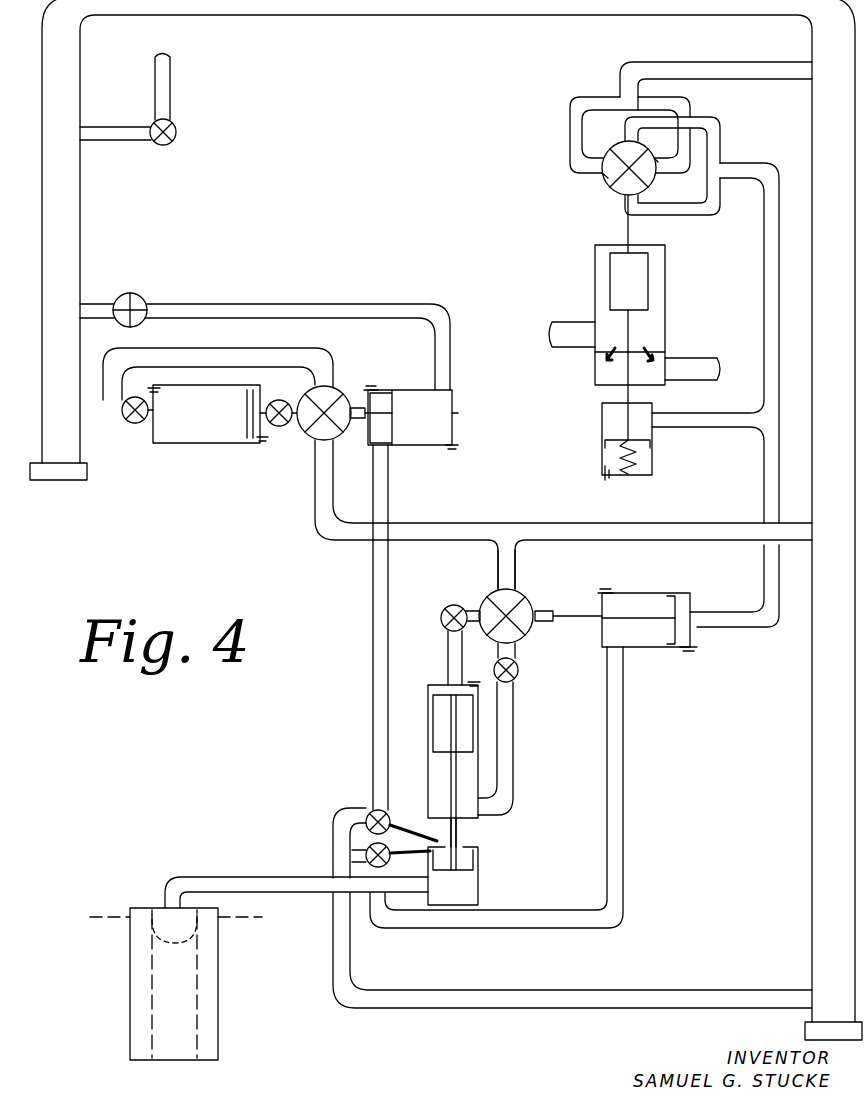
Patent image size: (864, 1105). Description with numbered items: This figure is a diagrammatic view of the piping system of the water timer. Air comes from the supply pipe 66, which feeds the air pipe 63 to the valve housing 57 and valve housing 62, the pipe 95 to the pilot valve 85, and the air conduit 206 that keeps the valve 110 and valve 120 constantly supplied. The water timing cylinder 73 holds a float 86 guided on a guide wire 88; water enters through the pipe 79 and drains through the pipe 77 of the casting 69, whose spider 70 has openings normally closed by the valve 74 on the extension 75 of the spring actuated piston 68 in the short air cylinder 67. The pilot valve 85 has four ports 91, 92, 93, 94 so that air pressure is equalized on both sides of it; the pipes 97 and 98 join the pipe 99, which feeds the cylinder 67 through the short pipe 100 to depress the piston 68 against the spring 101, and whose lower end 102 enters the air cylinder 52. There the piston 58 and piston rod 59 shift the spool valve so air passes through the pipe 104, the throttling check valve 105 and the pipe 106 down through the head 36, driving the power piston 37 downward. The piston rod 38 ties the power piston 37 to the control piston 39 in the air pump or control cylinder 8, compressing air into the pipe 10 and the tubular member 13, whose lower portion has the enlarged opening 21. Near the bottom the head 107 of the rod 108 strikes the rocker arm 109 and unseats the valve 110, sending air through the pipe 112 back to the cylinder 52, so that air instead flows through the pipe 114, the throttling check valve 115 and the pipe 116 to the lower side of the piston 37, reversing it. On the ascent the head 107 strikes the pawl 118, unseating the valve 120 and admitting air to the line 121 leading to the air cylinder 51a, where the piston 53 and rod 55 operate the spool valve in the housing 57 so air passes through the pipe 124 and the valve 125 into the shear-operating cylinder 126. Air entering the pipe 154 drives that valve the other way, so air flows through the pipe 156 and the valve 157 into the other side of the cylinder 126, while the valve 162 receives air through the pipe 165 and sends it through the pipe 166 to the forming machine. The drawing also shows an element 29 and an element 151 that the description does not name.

The air pump or control cylinder 8 is at (480, 906).
The pipe 10 is at (290, 893).
The tubular member 13 is at (212, 1028).
The enlarged opening 21 is at (175, 955).
The piston rod 29 is at (428, 770).
The head 36 is at (432, 700).
The power piston 37 is at (470, 745).
The piston rod 38 is at (458, 835).
The control piston 39 is at (480, 878).
The air cylinder 51a is at (458, 413).
The air cylinder 52 is at (630, 593).
The piston 53 is at (395, 413).
The rod 55 is at (382, 392).
The valve housing 57 is at (316, 396).
The piston 58 is at (672, 645).
The piston rod 59 is at (572, 622).
The valve housing 62 is at (516, 600).
The air pipe 63 is at (403, 523).
The supply pipe 66 is at (82, 220).
The short air cylinder 67 is at (602, 430).
The spring actuated piston 68 is at (640, 440).
The casting 69 is at (595, 372).
The spider 70 is at (655, 352).
The water timing container or cylinder 73 is at (595, 282).
The valve 74 is at (610, 360).
The extension 75 is at (640, 392).
The pipe 77 is at (700, 370).
The pipe 79 is at (566, 320).
The pilot valve 85 is at (614, 166).
The float 86 is at (648, 282).
The guide wire 88 is at (628, 232).
The port 91 is at (605, 176).
The port 92 is at (655, 162).
The port 93 is at (625, 196).
The port 94 is at (626, 140).
The pipe 95 is at (657, 68).
The pipe 97 is at (694, 118).
The pipe 98 is at (676, 216).
The pipe 99 is at (765, 302).
The short pipe 100 is at (700, 420).
The spring 101 is at (640, 462).
The lower end 102 is at (764, 500).
The pipe 104 is at (472, 610).
The throttling check valve 105 is at (441, 616).
The pipe 106 is at (448, 655).
The head 107 is at (437, 841).
The rod 108 is at (475, 860).
The rocker arm 109 is at (412, 863).
The valve 110 is at (366, 853).
The pipe 112 is at (612, 802).
The pipe 114 is at (512, 650).
The throttling check valve 115 is at (518, 676).
The pipe 116 is at (517, 770).
The pawl 118 is at (404, 812).
The valve 120 is at (370, 814).
The line 121 is at (345, 826).
The pipe 124 is at (281, 427).
The valve 125 is at (290, 440).
The shear-operating cylinder 126 is at (195, 445).
The valve 151 is at (143, 298).
The pipe 154 is at (250, 306).
The pipe 156 is at (213, 355).
The valve 157 is at (128, 421).
The valve 162 is at (154, 122).
The pipe 165 is at (104, 135).
The pipe 166 is at (166, 90).
The air conduit 206 is at (512, 566).